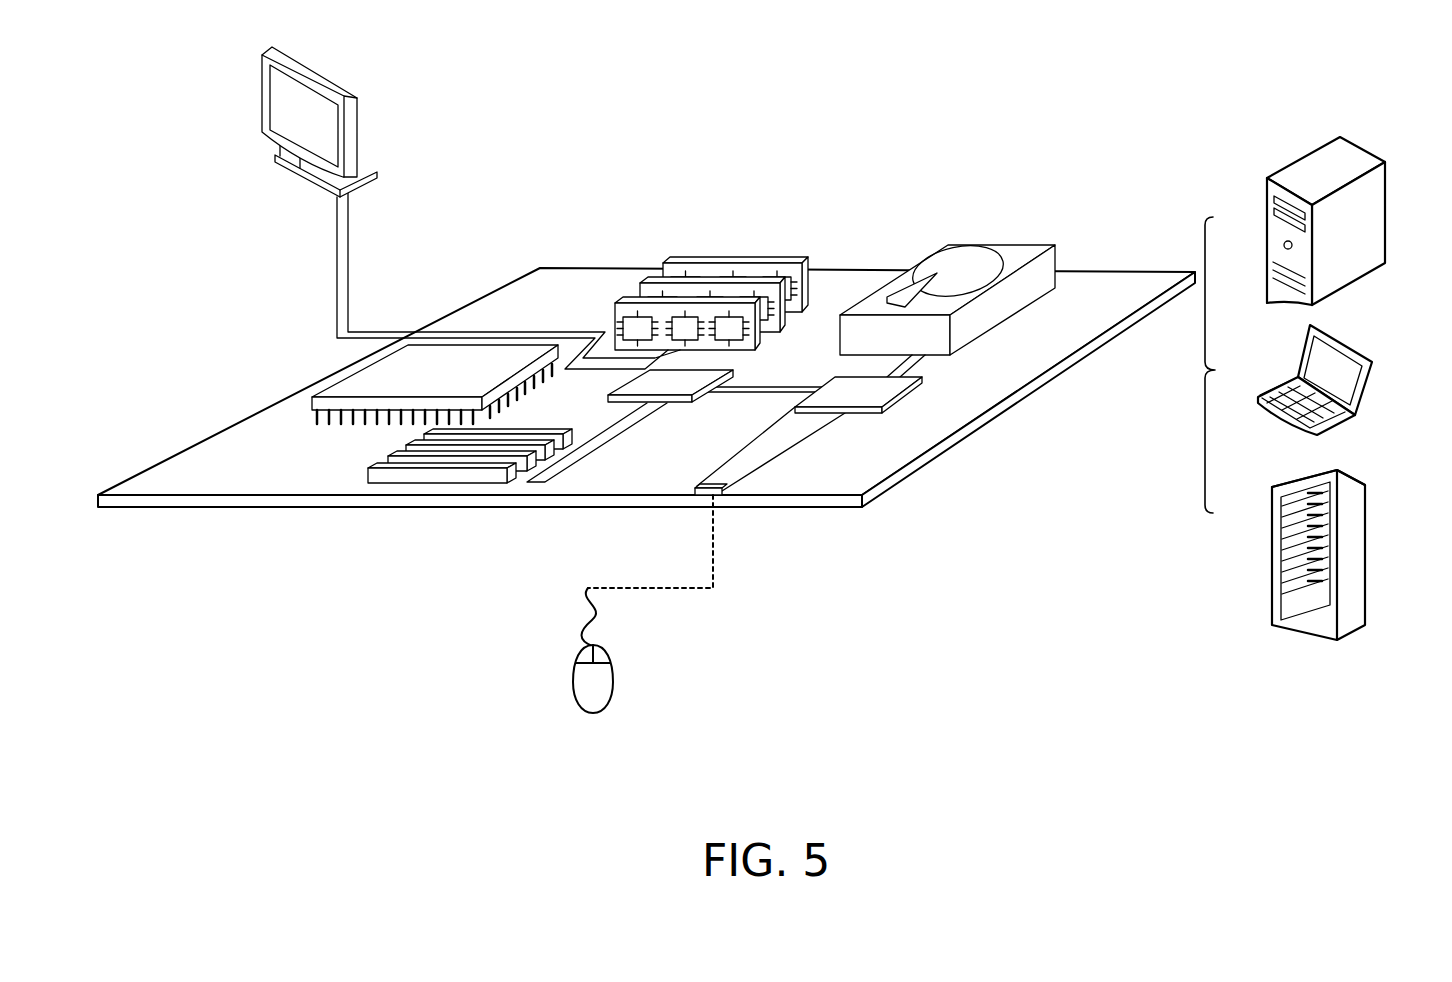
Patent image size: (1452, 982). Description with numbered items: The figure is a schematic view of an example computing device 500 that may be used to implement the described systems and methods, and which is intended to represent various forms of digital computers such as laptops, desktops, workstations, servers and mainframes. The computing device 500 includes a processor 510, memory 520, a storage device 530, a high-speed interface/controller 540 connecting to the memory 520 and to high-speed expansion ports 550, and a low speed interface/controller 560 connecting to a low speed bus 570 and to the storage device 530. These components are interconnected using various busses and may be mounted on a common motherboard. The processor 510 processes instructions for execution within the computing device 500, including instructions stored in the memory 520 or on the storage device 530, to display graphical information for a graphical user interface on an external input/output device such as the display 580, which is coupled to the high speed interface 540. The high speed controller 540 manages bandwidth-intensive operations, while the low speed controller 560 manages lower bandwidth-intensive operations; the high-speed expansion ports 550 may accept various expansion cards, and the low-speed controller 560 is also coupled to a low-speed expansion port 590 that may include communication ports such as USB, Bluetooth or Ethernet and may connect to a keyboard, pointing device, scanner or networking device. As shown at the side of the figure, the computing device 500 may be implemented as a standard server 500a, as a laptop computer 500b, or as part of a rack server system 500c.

The computing device 500 is at (812, 116).
The standard server 500a is at (1300, 158).
The laptop computer 500b is at (1355, 347).
The rack server system 500c is at (1360, 532).
The processor 510 is at (312, 397).
The memory 520 is at (732, 262).
The storage device 530 is at (997, 245).
The high-speed interface/controller 540 is at (683, 402).
The high-speed expansion ports 550 is at (368, 470).
The low speed interface/controller 560 is at (848, 380).
The low speed bus 570 is at (800, 452).
The display 580 is at (258, 100).
The low-speed expansion port 590 is at (722, 497).